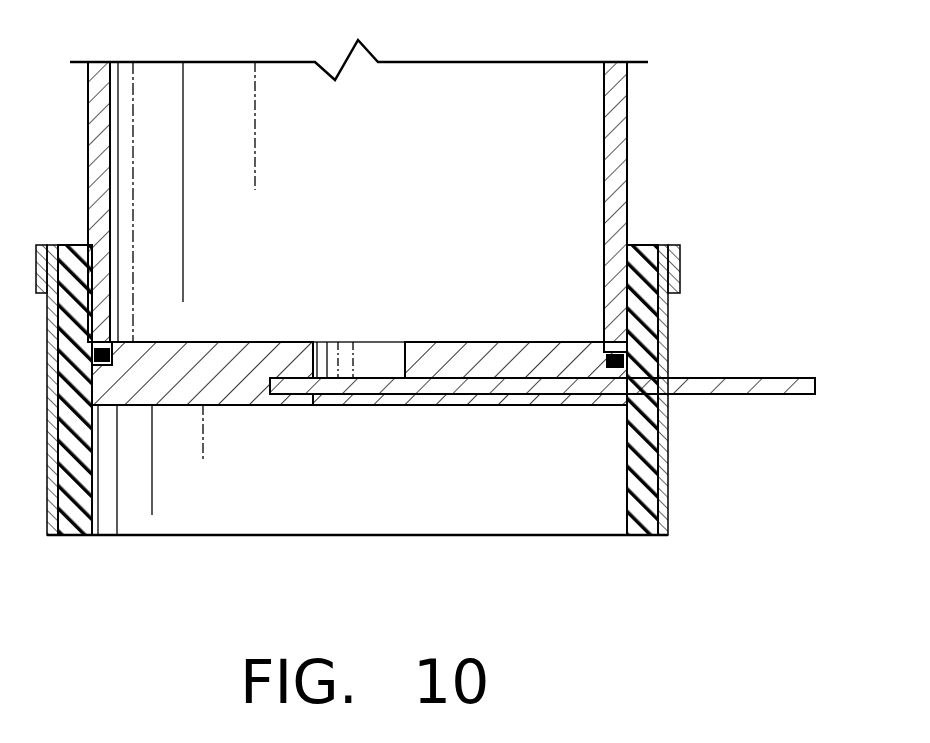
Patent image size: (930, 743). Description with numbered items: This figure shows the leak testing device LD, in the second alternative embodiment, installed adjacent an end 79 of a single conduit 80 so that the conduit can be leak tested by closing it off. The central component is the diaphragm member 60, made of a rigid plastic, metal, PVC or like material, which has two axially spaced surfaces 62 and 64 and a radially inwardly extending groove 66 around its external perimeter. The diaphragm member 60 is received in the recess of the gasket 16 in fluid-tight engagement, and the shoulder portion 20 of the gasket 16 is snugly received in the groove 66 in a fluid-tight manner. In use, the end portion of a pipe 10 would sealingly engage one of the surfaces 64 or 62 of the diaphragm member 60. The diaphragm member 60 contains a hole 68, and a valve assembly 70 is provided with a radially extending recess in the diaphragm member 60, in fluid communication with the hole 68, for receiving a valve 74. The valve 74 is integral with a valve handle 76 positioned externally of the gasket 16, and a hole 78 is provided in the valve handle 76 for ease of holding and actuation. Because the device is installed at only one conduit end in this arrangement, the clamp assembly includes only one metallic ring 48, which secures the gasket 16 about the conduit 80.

The pipe 10 is at (722, 563).
The gasket 16 is at (635, 243).
The shoulder portion 20 is at (118, 343).
The upper metallic ring 48 is at (680, 262).
The diaphragm member 60 is at (237, 338).
The surface 62 is at (477, 342).
The surface 64 is at (187, 406).
The groove 66 is at (604, 382).
The hole 68 is at (377, 342).
The valve assembly 70 is at (378, 408).
The valve 74 is at (325, 406).
The valve handle 76 is at (795, 377).
The hole 78 is at (748, 395).
The end 79 is at (598, 330).
The conduit 80 is at (625, 130).